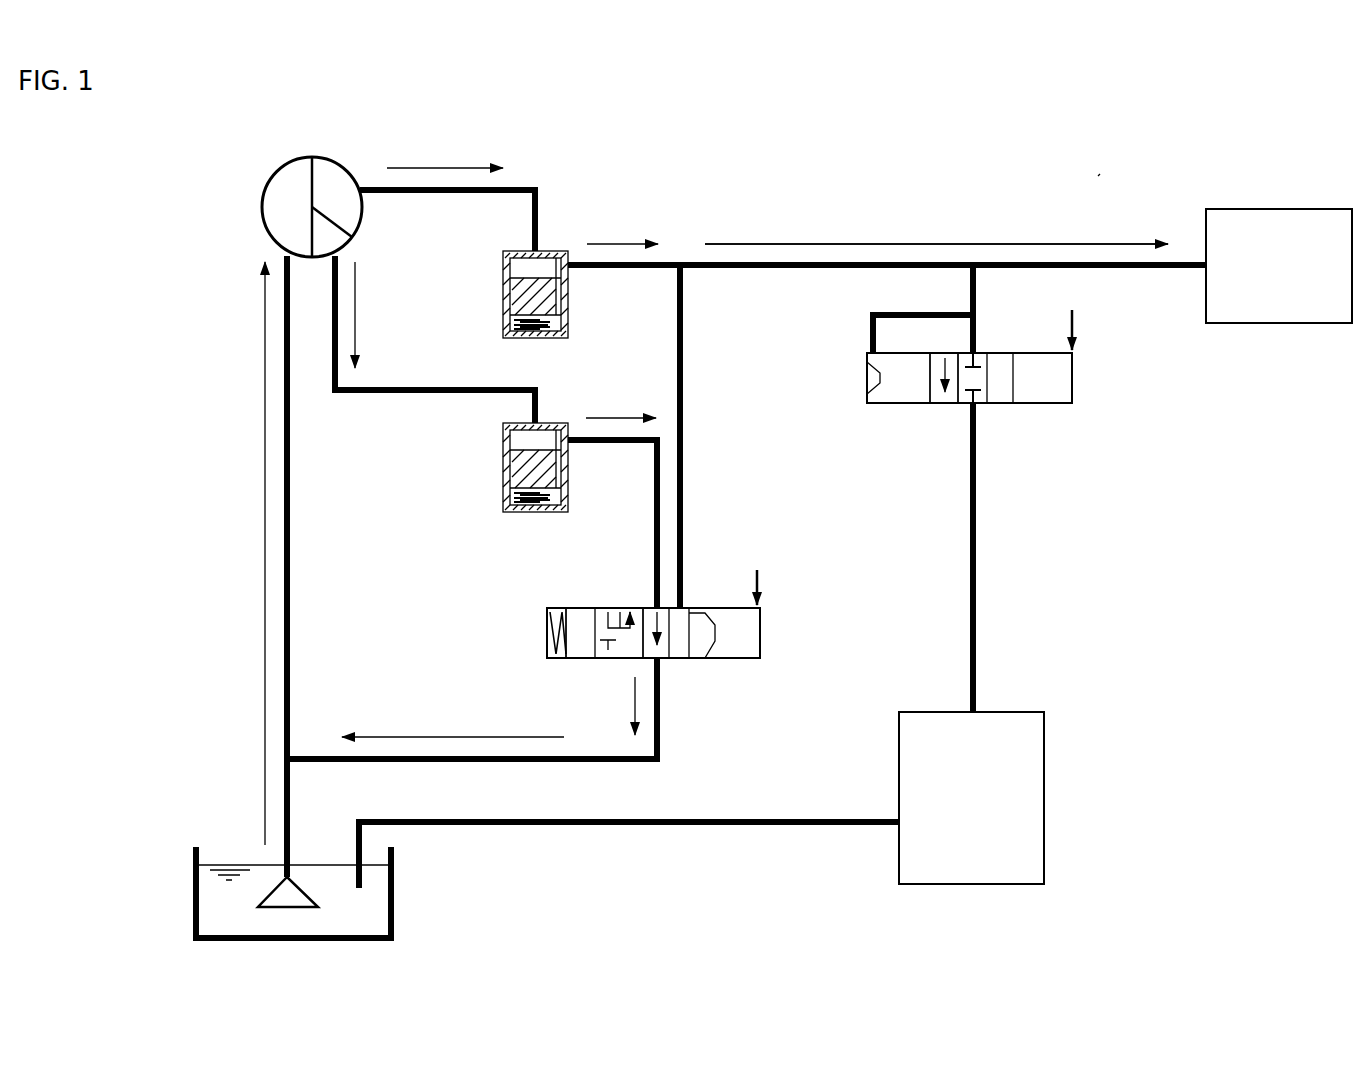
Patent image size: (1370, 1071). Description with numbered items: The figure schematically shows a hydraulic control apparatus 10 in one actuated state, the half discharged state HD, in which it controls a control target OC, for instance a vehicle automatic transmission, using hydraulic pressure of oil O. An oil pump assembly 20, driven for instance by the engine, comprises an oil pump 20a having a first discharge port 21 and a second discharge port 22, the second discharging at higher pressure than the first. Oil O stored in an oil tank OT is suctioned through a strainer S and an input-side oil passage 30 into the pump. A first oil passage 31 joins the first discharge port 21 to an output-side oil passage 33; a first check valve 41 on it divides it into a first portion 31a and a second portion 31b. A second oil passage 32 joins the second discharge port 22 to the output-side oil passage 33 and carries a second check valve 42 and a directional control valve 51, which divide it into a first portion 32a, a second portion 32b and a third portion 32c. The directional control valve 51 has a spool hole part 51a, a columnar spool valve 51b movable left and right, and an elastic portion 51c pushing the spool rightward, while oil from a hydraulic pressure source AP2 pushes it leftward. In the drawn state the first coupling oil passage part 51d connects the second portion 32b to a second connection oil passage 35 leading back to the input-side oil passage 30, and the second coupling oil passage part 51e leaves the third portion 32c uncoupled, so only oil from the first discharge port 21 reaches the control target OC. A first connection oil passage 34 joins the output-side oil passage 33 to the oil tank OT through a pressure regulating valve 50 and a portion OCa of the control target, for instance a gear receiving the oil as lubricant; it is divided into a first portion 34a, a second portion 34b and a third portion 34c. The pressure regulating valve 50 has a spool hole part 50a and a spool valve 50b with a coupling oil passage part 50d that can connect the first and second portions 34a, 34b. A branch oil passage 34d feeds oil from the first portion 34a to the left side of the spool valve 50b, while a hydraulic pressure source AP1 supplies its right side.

The hydraulic control apparatus 10 is at (1102, 172).
The oil pump assembly 20 is at (252, 160).
The oil pump 20a is at (298, 148).
The first discharge port 21 is at (332, 181).
The second discharge port 22 is at (325, 242).
The input-side oil passage 30 is at (292, 522).
The first oil passage 31 is at (528, 182).
The first portion 31a is at (445, 198).
The second portion 31b is at (603, 272).
The second oil passage 32 is at (420, 398).
The first portion 32a is at (440, 388).
The second portion 32b is at (605, 448).
The third portion 32c is at (685, 495).
The output-side oil passage 33 is at (790, 270).
The first connection oil passage 34 is at (985, 553).
The first portion 34a is at (975, 298).
The second portion 34b is at (978, 505).
The third portion 34c is at (748, 828).
The branch oil passage 34d is at (895, 313).
The second connection oil passage 35 is at (630, 762).
The first check valve 41 is at (565, 240).
The second check valve 42 is at (505, 525).
The pressure regulating valve 50 is at (1075, 410).
The spool hole part 50a is at (1058, 386).
The spool valve 50b is at (898, 386).
The coupling oil passage part 50d is at (940, 398).
The directional control valve 51 is at (755, 672).
The spool hole part 51a is at (745, 655).
The spool valve 51b is at (692, 630).
The elastic portion 51c is at (548, 645).
The first coupling oil passage part 51d is at (665, 640).
The second coupling oil passage part 51e is at (605, 612).
The hydraulic pressure source AP1 is at (1082, 317).
The hydraulic pressure source AP2 is at (773, 573).
The half discharged state HD is at (962, 233).
The control target OC is at (1310, 225).
The portion of the control target OCa is at (1040, 728).
The oil tank OT is at (192, 885).
The oil O is at (378, 900).
The strainer S is at (290, 898).